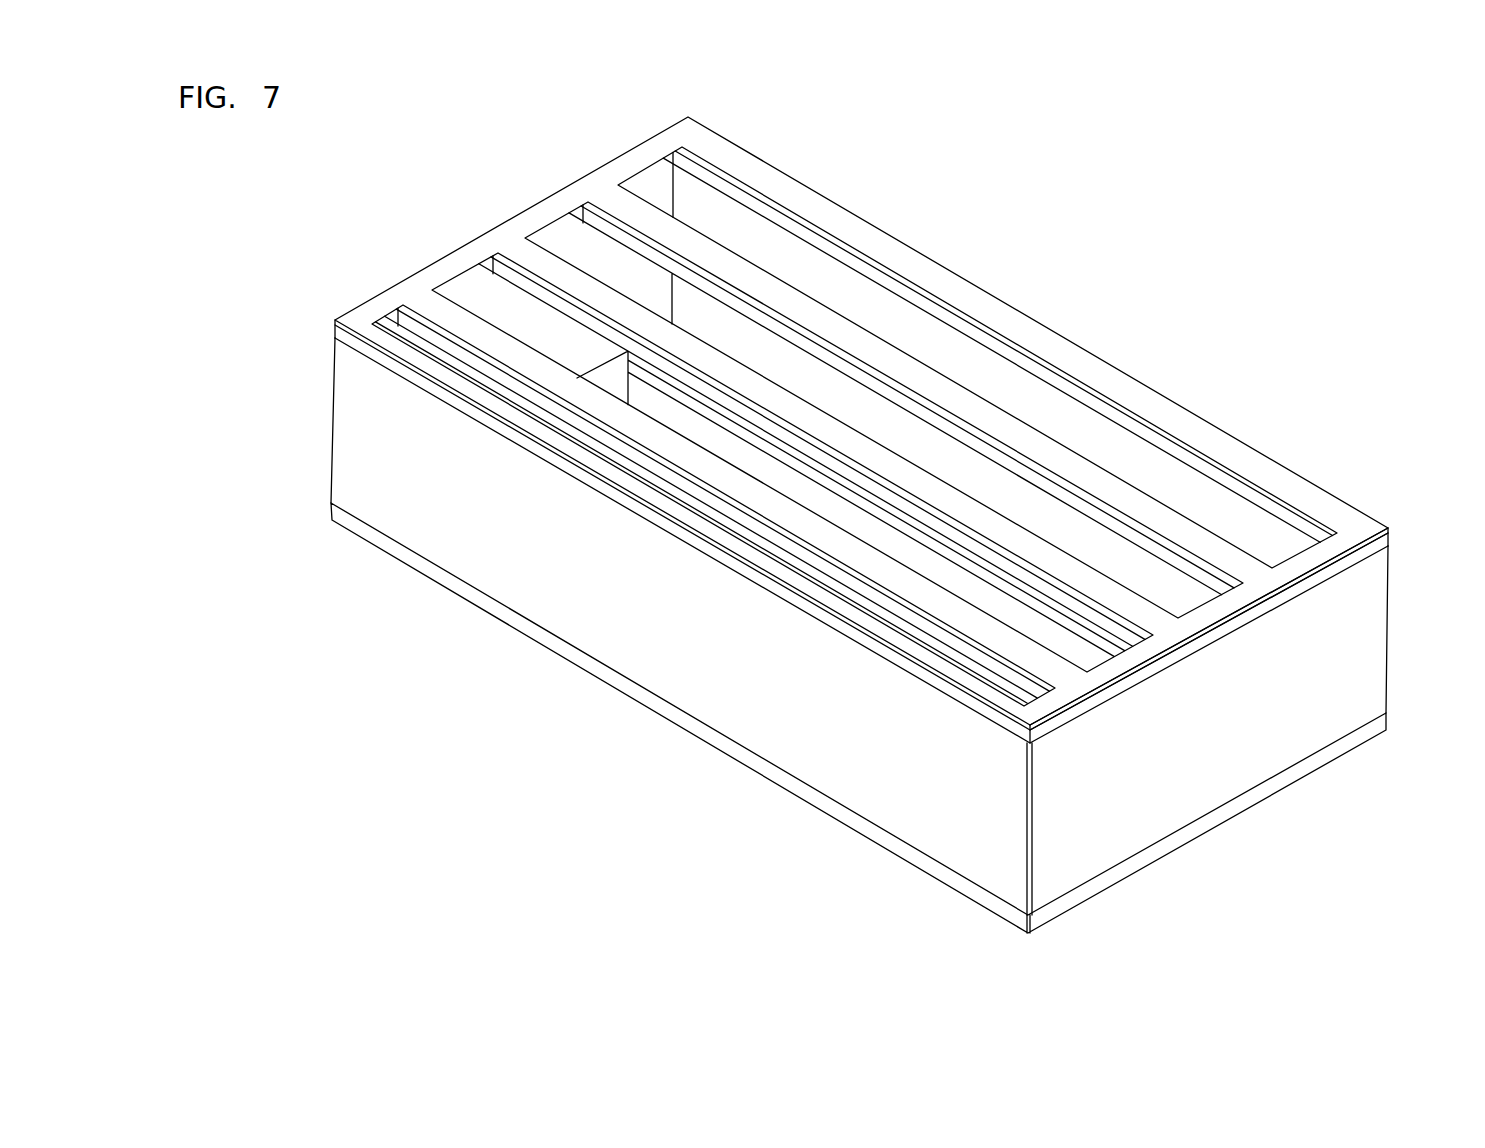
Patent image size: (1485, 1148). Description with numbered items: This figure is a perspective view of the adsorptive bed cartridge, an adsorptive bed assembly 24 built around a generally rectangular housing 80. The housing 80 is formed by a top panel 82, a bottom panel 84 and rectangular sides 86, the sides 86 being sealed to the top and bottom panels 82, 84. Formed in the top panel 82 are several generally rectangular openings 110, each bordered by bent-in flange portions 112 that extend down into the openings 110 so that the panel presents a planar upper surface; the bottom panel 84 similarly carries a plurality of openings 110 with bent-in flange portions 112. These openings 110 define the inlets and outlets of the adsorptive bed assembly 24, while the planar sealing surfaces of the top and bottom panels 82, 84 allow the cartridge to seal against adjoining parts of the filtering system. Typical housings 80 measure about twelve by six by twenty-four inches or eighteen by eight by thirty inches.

The adsorptive bed assembly 24 is at (1094, 288).
The housing 80 is at (1393, 530).
The top panel 82 is at (1160, 640).
The bottom panel 84 is at (930, 867).
The rectangular sides 86 is at (1338, 628).
The openings 110 is at (762, 243).
The flange portions 112 is at (688, 168).